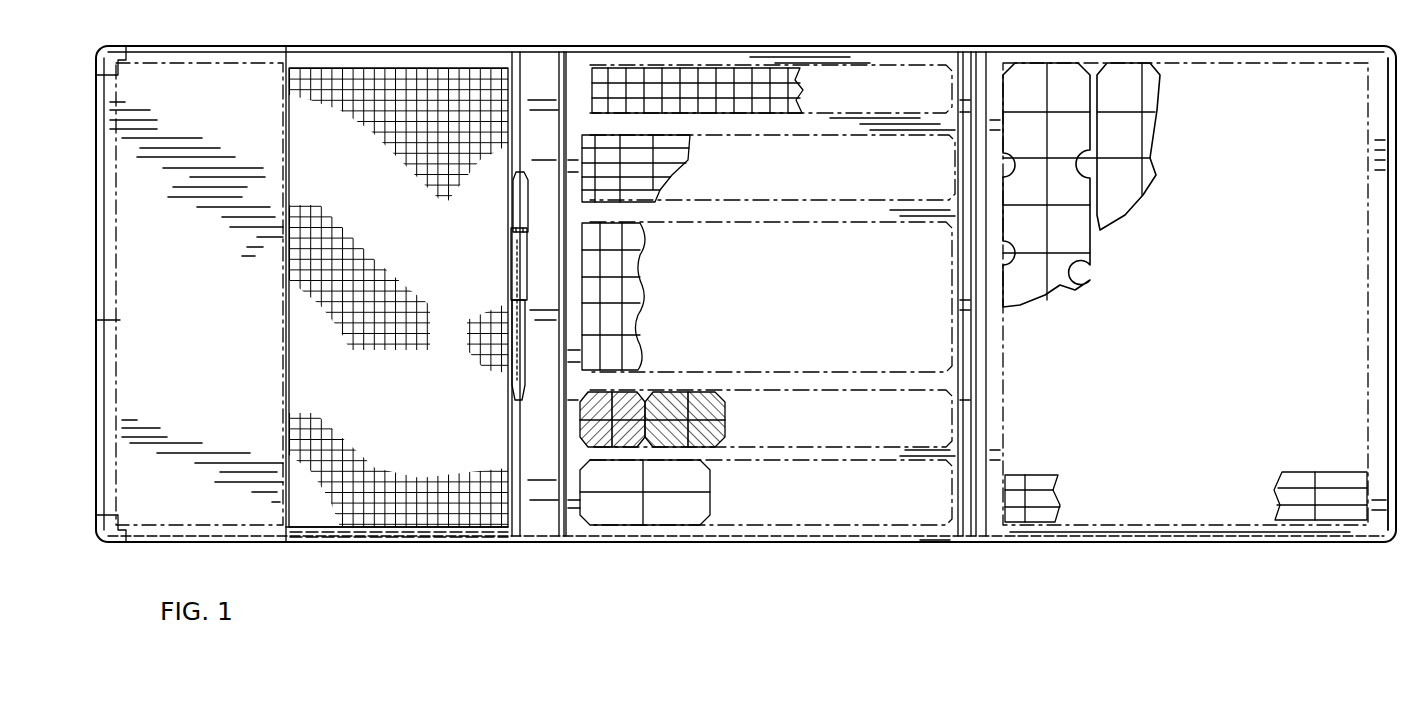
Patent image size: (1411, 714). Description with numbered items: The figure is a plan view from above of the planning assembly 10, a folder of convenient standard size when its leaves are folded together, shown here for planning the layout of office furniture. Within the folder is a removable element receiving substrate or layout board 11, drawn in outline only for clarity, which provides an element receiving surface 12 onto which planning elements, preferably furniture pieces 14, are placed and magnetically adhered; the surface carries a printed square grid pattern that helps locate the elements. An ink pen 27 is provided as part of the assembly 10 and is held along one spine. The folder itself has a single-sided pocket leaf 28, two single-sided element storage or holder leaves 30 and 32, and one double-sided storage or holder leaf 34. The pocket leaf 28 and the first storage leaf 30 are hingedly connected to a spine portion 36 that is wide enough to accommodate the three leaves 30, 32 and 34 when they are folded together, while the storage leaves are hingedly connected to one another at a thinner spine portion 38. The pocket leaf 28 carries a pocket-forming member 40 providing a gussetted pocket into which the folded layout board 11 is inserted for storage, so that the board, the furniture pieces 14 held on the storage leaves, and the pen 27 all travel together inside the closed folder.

The planning assembly 10 is at (770, 623).
The layout board 11 is at (325, 530).
The element receiving surface 12 is at (375, 505).
The furniture pieces 14 is at (805, 100).
The ink pen 27 is at (512, 218).
The single-sided pocket leaf 28 is at (440, 540).
The single-sided element storage leaf 30 is at (630, 538).
The single-sided element storage leaf 32 is at (1392, 512).
The double-sided storage leaf 34 is at (1175, 530).
The spine portion 36 is at (537, 535).
The thinner spine portion 38 is at (975, 542).
The pocket-forming member 40 is at (258, 515).